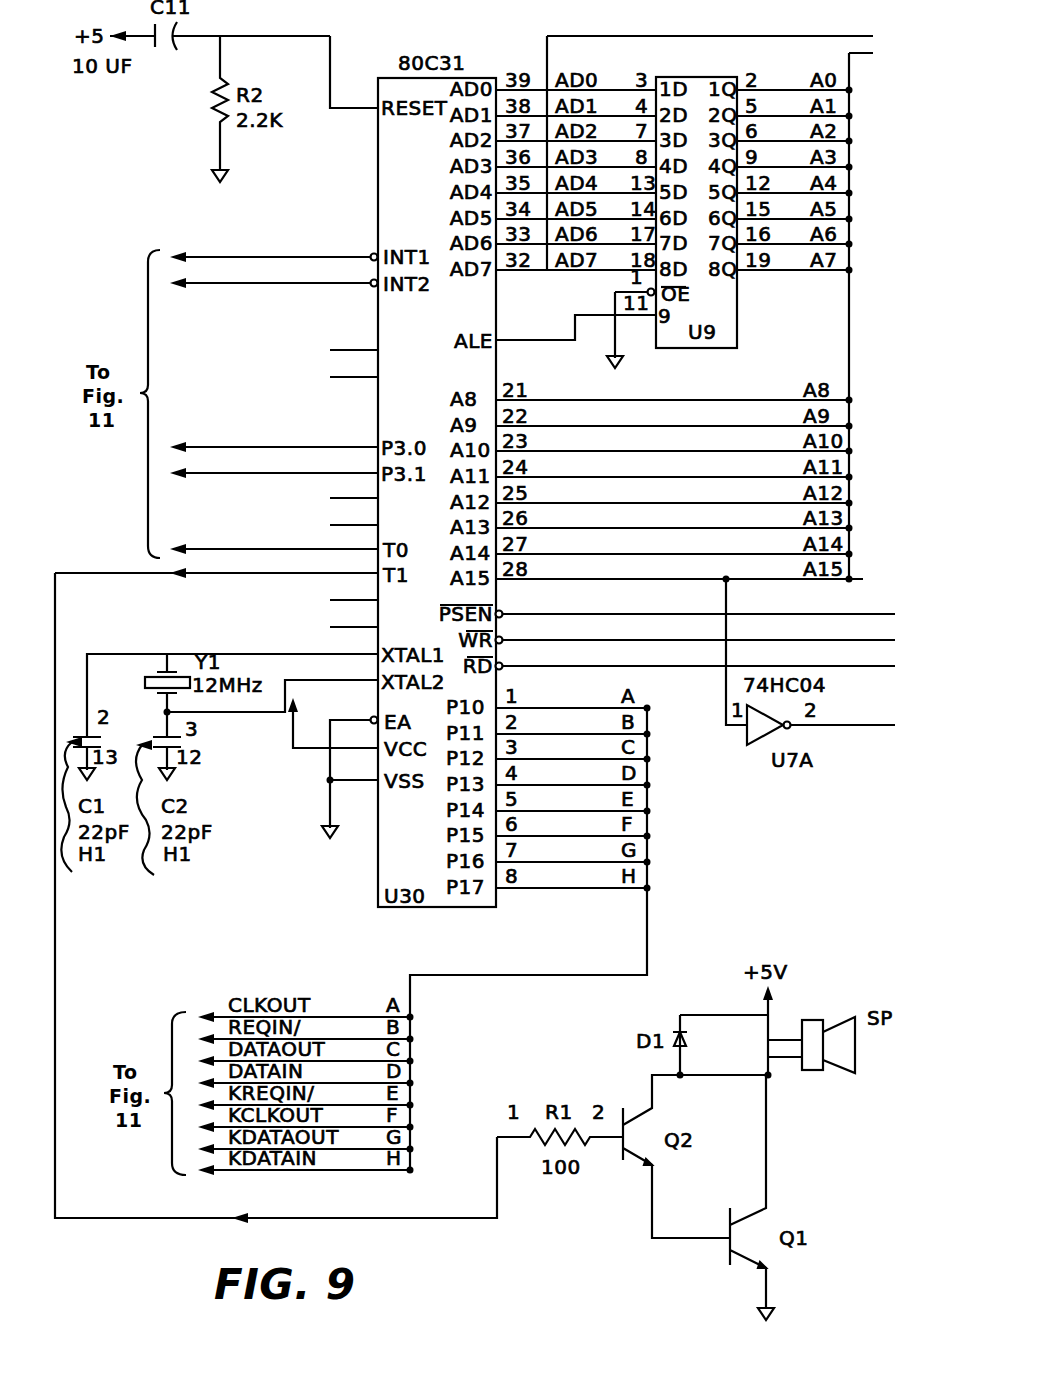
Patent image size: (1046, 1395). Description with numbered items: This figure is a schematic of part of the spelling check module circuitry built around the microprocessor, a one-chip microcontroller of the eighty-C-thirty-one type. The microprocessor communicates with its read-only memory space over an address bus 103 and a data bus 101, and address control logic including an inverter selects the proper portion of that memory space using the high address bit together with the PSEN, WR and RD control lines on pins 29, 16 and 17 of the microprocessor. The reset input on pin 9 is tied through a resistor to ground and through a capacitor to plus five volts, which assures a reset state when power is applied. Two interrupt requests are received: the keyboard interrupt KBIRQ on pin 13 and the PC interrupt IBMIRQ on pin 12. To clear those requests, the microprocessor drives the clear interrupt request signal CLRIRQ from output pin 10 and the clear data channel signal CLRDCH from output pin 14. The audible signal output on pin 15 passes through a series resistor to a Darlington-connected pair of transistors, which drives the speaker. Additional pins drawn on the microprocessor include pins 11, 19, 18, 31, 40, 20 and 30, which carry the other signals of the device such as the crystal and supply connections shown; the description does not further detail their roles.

The data bus 101 is at (547, 53).
The address bus 103 is at (849, 63).
The reset input pin 9 is at (354, 72).
The keyboard interrupt pin 13 is at (274, 246).
The PC interrupt pin 12 is at (274, 273).
The clear interrupt request output pin 10 is at (274, 437).
The P3.1 pin (CONFIG/) 11 is at (274, 463).
The clear data channel output pin 14 is at (274, 539).
The audible signal output pin 15 is at (276, 886).
The XTAL1 pin 19 is at (232, 683).
The XTAL2 pin 18 is at (272, 684).
The EA pin 31 is at (350, 766).
The VCC pin 40 is at (315, 723).
The VSS pin 20 is at (353, 770).
The ALE pin 30 is at (576, 326).
The PSEN control line pin 29 is at (696, 602).
The WR control line pin 16 is at (696, 628).
The RD control line pin 17 is at (696, 654).